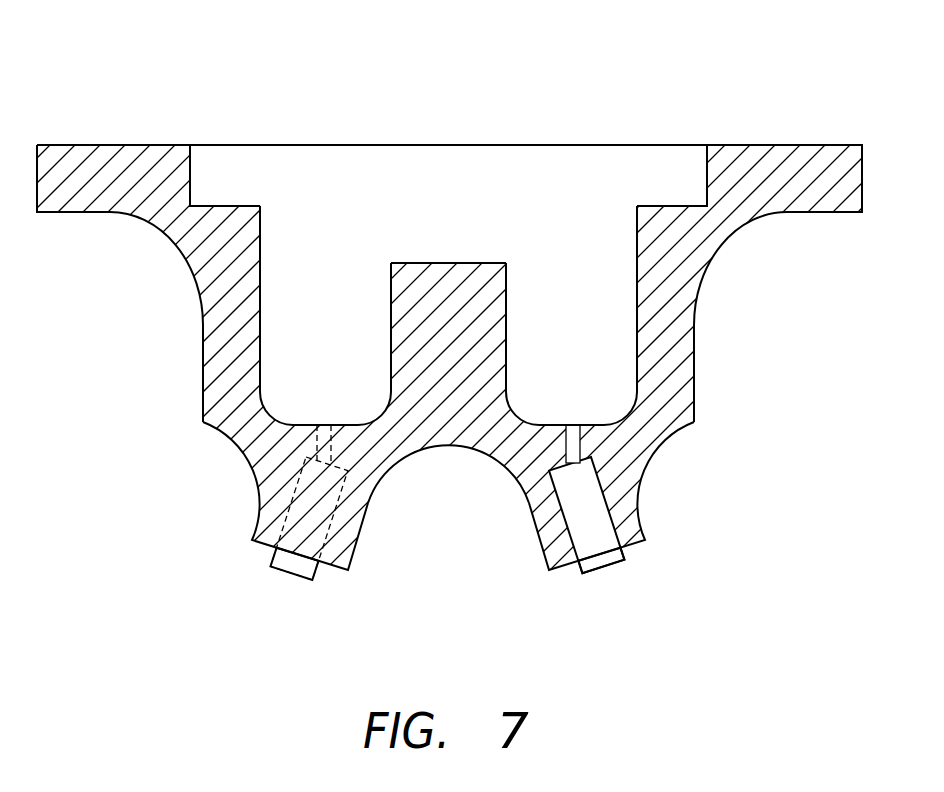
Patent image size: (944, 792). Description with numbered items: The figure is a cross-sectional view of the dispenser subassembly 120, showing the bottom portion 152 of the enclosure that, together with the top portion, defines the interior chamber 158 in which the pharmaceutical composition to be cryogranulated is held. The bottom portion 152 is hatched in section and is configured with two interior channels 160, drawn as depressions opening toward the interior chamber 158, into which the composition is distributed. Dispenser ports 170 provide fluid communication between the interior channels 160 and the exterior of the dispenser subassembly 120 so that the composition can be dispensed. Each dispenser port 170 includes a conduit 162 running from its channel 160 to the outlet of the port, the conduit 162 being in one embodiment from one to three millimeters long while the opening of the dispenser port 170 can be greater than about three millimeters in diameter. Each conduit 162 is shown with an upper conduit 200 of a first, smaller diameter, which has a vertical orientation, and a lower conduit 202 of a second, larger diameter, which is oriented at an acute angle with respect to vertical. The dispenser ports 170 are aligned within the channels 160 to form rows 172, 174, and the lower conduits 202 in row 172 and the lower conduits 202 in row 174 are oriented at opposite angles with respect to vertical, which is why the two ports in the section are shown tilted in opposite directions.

The dispenser subassembly 120 is at (472, 327).
The bottom portion 152 is at (203, 352).
The interior chamber 158 is at (491, 170).
The interior channel 160 is at (342, 327).
The conduit 162 is at (320, 420).
The dispenser port 170 is at (272, 565).
The row of dispenser ports 172 is at (661, 545).
The row of dispenser ports 174 is at (239, 544).
The upper conduit 200 is at (580, 447).
The lower conduit 202 is at (613, 517).